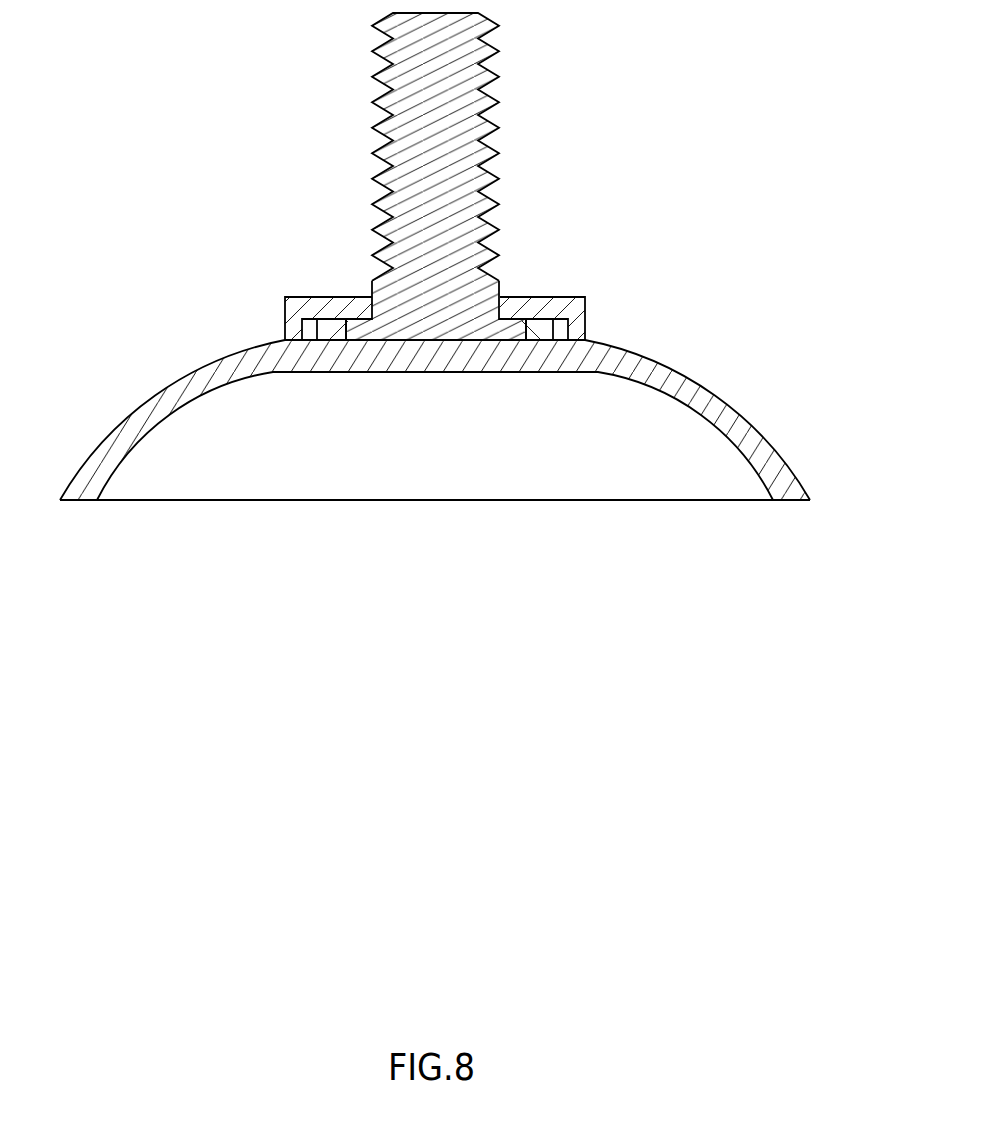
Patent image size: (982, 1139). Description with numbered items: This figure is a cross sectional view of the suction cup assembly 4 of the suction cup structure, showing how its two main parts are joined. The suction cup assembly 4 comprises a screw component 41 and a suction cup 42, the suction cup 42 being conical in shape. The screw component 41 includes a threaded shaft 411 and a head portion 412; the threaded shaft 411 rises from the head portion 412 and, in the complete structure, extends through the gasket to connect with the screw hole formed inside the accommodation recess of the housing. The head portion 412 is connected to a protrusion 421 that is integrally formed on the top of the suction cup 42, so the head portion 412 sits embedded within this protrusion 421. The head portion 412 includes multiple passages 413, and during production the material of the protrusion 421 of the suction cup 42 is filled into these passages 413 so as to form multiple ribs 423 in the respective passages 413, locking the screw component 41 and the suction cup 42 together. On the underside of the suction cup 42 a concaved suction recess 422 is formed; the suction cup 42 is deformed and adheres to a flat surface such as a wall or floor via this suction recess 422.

The suction cup assembly 4 is at (728, 127).
The screw component 41 is at (668, 17).
The threaded shaft 411 is at (495, 127).
The head portion 412 is at (501, 305).
The passages 413 is at (546, 328).
The suction cup 42 is at (662, 354).
The protrusion 421 is at (335, 297).
The suction recess 422 is at (592, 503).
The ribs 423 is at (482, 299).